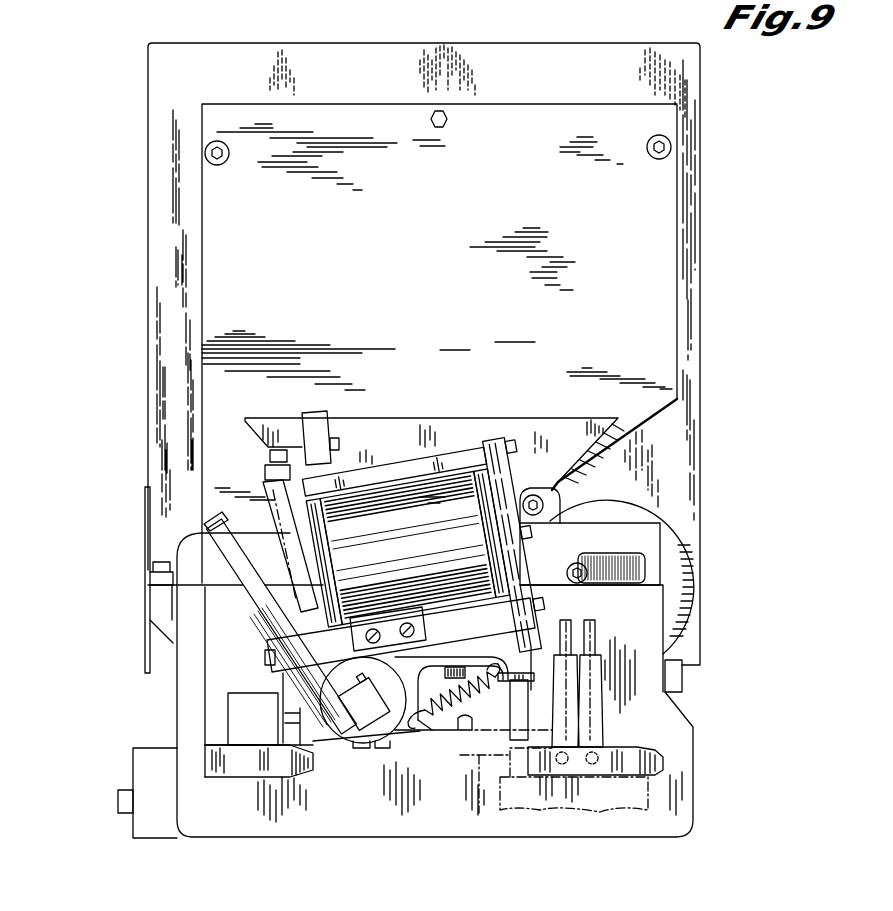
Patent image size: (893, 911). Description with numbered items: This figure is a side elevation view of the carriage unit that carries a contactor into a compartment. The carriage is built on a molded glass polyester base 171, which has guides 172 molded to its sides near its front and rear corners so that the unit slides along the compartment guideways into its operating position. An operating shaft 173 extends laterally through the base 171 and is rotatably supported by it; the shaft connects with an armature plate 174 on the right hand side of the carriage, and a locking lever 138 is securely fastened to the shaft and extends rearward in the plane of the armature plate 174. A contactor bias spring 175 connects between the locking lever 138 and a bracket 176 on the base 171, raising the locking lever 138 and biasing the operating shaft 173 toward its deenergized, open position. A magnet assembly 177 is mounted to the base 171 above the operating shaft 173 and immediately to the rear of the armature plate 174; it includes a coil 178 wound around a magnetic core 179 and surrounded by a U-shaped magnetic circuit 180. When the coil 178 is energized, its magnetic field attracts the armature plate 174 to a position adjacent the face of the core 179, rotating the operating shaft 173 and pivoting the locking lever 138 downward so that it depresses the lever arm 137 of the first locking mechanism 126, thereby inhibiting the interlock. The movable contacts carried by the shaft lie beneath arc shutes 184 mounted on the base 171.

The arc shute 184 is at (492, 192).
The U-shaped magnetic circuit 180 is at (455, 460).
The magnet assembly 177 is at (421, 457).
The coil 178 is at (438, 554).
The magnetic core 179 is at (320, 547).
The armature plate 174 is at (178, 549).
The bracket 176 is at (500, 637).
The operating shaft 173 is at (360, 708).
The contactor bias spring 175 is at (450, 722).
The locking lever 138 is at (460, 733).
The base 171 is at (366, 818).
The guides 172 is at (285, 777).
The first locking mechanism 126 is at (653, 792).
The lever arm 137 is at (479, 760).